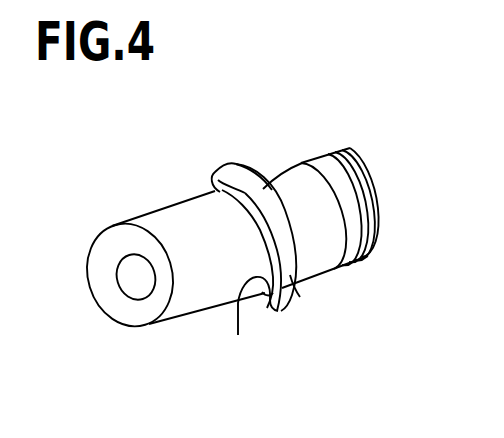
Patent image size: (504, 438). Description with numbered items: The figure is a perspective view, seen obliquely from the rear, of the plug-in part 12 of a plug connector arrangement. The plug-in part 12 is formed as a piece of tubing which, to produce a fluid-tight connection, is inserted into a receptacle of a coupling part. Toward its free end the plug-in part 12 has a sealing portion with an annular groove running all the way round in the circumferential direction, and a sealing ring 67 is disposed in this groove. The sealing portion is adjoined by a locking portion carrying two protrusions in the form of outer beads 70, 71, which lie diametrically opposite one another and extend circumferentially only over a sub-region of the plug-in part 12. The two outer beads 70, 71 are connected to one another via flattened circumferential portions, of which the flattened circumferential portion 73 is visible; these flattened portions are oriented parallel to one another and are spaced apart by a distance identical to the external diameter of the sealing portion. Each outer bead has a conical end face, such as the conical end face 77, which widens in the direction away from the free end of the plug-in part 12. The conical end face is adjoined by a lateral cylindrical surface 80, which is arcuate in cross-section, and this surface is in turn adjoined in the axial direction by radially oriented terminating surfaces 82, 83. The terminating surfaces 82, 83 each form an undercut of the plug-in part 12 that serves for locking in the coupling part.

The plug-in part 12 is at (373, 153).
The sealing ring 67 is at (345, 215).
The outer bead 70 is at (222, 161).
The outer bead 71 is at (276, 313).
The flattened circumferential portion 73 is at (272, 191).
The conical end face 77 is at (326, 270).
The lateral cylindrical surface 80 is at (300, 297).
The terminating surface 82 is at (215, 183).
The terminating surface 83 is at (238, 335).